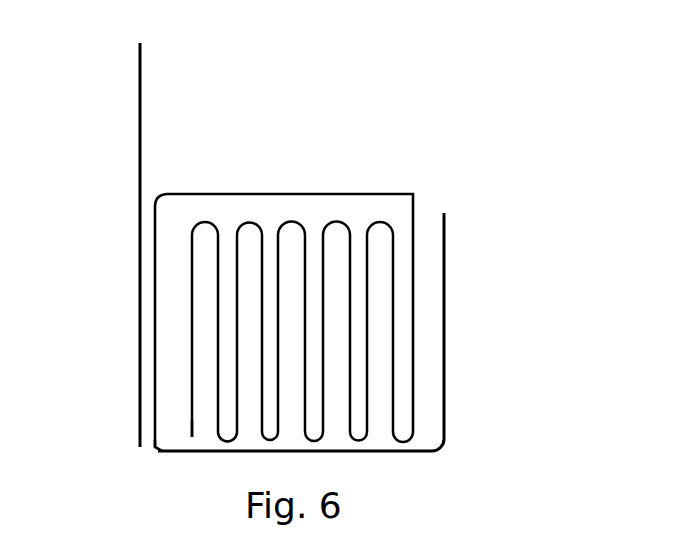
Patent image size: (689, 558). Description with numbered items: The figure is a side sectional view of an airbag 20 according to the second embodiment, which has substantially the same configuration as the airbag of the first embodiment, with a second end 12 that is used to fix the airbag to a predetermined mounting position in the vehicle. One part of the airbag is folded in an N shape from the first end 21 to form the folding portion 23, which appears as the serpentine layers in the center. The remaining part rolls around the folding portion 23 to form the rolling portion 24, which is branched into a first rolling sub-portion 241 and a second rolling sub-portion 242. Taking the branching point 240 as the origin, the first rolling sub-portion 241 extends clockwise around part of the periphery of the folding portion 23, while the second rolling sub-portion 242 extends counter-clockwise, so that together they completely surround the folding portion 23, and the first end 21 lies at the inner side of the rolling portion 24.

The second end 12 is at (138, 68).
The airbag 20 is at (377, 120).
The first end 21 is at (192, 438).
The folding portion 23 is at (340, 268).
The rolling portion 24 is at (302, 269).
The branching point 240 is at (155, 447).
The first rolling sub-portion 241 is at (155, 267).
The second rolling sub-portion 242 is at (408, 450).